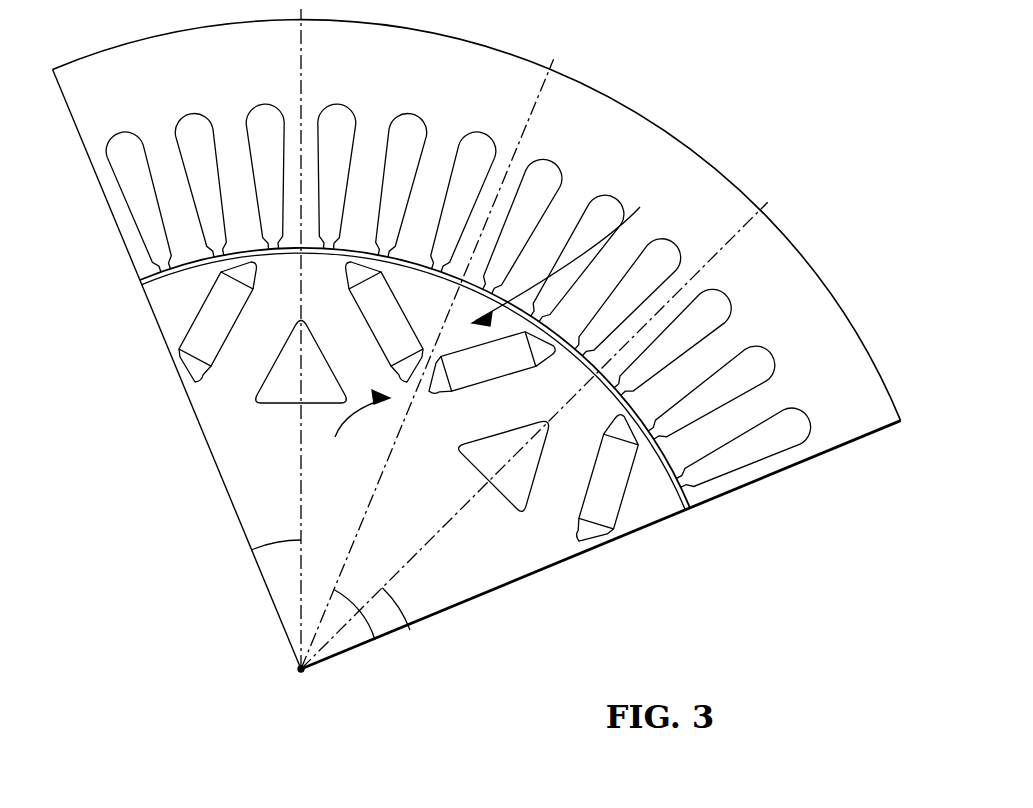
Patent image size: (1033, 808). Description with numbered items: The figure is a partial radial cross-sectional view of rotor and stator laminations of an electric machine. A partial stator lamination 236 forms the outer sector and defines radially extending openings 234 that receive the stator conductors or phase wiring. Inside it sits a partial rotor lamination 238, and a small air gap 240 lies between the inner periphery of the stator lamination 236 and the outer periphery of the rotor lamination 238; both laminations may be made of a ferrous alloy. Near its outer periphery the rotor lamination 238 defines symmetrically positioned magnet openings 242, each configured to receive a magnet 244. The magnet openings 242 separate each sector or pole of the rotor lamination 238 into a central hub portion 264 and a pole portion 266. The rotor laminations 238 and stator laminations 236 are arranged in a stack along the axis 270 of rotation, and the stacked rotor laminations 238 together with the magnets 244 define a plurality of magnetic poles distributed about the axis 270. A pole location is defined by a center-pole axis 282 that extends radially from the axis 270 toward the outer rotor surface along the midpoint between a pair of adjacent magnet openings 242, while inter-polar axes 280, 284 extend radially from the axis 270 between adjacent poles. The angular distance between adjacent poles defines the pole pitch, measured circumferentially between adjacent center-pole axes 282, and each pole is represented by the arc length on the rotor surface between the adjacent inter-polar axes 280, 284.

The radially extending openings 234 is at (262, 192).
The stator lamination 236 is at (822, 270).
The rotor lamination 238 is at (497, 553).
The air gap 240 is at (140, 283).
The magnet openings 242 is at (348, 298).
The magnet 244 is at (360, 275).
The central hub portion 264 is at (348, 426).
The pole portion 266 is at (570, 255).
The axis of rotation 270 is at (298, 670).
The inter-polar axis 280 is at (410, 630).
The center-pole axis 282 is at (375, 640).
The inter-polar axis 284 is at (275, 550).